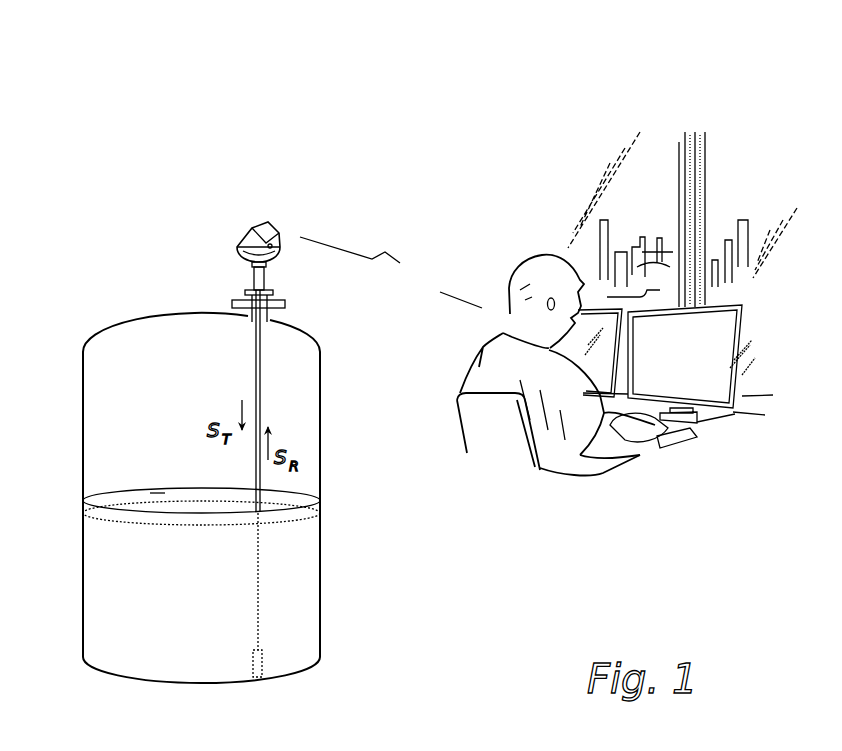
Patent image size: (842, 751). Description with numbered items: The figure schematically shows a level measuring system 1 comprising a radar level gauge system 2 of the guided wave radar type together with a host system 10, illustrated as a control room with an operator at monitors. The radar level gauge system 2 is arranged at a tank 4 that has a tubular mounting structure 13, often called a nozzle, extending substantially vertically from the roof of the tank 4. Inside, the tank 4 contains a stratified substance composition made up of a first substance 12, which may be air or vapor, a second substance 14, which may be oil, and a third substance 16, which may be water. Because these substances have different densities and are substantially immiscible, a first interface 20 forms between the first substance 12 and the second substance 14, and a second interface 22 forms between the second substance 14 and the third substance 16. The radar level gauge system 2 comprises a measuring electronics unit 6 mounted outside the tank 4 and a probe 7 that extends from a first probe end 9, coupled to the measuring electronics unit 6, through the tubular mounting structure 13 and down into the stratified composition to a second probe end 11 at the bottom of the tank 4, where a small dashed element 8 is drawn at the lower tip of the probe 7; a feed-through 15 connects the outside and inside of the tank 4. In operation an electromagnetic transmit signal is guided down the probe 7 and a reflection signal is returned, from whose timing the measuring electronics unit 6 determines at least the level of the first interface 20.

The level measuring system 1 is at (480, 77).
The radar level gauge system 2 is at (224, 175).
The tank 4 is at (82, 442).
The measuring electronics unit 6 is at (252, 229).
The probe 7 is at (260, 403).
The end weight 8 is at (260, 663).
The first probe end 9 is at (245, 294).
The host system 10 is at (735, 185).
The second probe end 11 is at (258, 681).
The first substance 12 is at (173, 371).
The tubular mounting structure 13 is at (280, 312).
The second substance 14 is at (297, 515).
The feed-through 15 is at (245, 292).
The third substance 16 is at (180, 604).
The first interface 20 is at (158, 497).
The second interface 22 is at (113, 515).